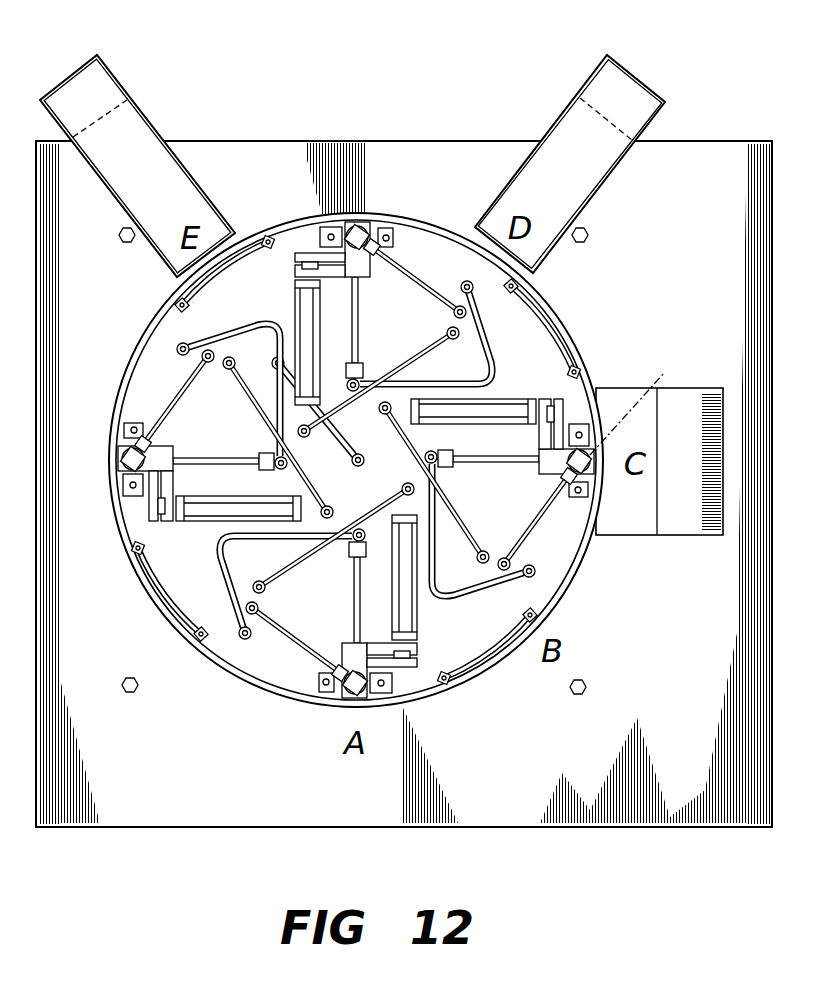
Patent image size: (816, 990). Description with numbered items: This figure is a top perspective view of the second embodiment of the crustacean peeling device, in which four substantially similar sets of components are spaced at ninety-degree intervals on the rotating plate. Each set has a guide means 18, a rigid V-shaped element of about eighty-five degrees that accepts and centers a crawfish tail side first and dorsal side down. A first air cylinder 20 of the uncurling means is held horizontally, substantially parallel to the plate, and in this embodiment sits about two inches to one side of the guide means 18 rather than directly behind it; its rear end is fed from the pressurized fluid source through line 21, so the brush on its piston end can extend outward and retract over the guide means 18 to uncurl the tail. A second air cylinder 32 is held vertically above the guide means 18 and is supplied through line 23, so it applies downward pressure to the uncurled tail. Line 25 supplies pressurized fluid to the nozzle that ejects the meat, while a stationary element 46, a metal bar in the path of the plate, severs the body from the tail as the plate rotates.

The guide means 18 is at (337, 227).
The first air cylinder 20 is at (297, 322).
The line 21 is at (420, 355).
The line 23 is at (410, 266).
The line 25 is at (245, 330).
The second air cylinder 32 is at (364, 225).
The stationary element 46 is at (640, 401).